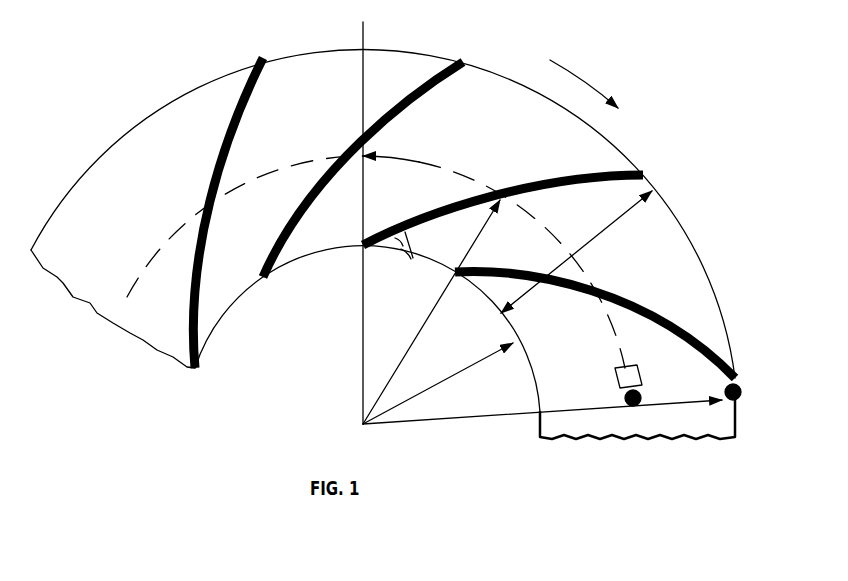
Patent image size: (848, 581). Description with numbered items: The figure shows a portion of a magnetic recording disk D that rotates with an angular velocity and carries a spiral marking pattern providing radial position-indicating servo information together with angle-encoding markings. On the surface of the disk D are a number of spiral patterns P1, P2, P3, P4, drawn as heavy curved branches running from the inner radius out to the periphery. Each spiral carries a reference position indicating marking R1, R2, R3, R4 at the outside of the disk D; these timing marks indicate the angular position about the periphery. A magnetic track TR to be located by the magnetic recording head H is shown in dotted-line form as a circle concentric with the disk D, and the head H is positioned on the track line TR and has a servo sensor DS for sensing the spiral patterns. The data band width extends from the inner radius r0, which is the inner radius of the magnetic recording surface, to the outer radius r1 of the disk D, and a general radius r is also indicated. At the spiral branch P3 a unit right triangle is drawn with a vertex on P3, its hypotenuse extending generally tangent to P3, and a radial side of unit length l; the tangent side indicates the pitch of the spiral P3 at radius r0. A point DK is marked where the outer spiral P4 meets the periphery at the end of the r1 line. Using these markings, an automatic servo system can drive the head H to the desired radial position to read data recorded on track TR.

The magnetic recording disk D is at (125, 114).
The spiral pattern P1 is at (222, 133).
The spiral pattern P2 is at (415, 104).
The spiral pattern P3 is at (576, 172).
The spiral pattern P4 is at (662, 322).
The reference position indicating marking R1 is at (262, 58).
The reference position indicating marking R2 is at (467, 60).
The reference position indicating marking R3 is at (645, 176).
The reference position indicating marking R4 is at (735, 374).
The magnetic track TR is at (172, 232).
The radius r is at (431, 312).
The inner radius r0 is at (438, 383).
The outer radius r1 is at (542, 427).
The radial line of unit length l is at (415, 241).
The magnetic recording head H is at (617, 378).
The servo sensor DS is at (633, 406).
The outer contact point DK is at (742, 394).